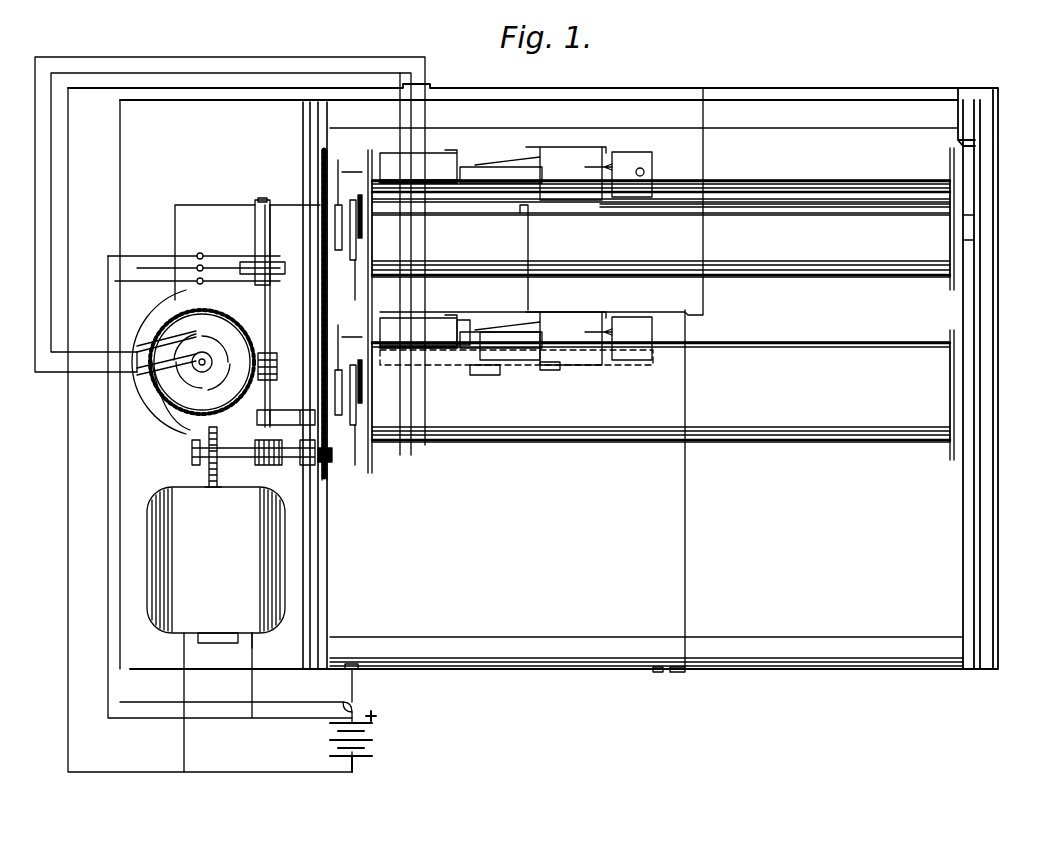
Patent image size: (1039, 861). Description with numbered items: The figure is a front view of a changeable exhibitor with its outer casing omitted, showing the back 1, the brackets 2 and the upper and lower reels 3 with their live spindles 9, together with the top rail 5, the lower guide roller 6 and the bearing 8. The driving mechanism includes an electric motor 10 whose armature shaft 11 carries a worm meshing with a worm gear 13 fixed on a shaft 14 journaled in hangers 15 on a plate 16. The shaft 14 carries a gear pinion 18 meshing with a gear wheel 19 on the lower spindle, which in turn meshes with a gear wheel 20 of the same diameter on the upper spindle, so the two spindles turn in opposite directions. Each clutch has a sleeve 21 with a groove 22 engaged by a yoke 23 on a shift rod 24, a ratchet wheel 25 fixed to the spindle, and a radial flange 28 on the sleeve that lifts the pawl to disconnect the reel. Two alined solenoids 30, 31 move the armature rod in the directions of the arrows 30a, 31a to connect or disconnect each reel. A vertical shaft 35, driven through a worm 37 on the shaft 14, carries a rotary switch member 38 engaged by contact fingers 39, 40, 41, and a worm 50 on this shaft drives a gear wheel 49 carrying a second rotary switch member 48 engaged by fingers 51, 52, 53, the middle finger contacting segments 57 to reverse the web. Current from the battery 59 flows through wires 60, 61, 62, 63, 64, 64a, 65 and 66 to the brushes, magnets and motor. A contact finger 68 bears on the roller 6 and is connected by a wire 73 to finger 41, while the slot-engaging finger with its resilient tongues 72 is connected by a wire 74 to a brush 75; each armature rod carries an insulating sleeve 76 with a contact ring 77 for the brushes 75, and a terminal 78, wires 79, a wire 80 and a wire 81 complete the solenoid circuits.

The back 1 is at (808, 90).
The bracket 2 is at (985, 420).
The reel 3 is at (792, 340).
The top rail 5 is at (902, 100).
The lower guide roller 6 is at (918, 650).
The roller bearing 8 is at (965, 215).
The live spindle 9 is at (364, 228).
The electric motor 10 is at (216, 560).
The armature shaft 11 is at (218, 643).
The worm gear 13 is at (220, 468).
The shaft 14 is at (234, 450).
The hanger 15 is at (180, 448).
The plate 16 is at (200, 205).
The gear pinion 18 is at (330, 480).
The gear wheel 19 is at (332, 462).
The gear wheel 20 is at (322, 165).
The sleeve 21 is at (352, 262).
The groove 22 is at (322, 258).
The yoke 23 is at (324, 186).
The shift rod 24 is at (344, 172).
The ratchet wheel 25 is at (372, 262).
The radial flange 28 is at (372, 215).
The solenoid 30 is at (440, 160).
The arrow 30a is at (470, 170).
The solenoid 31 is at (570, 160).
The arrow 31a is at (600, 165).
The vertical shaft 35 is at (286, 336).
The worm 37 is at (272, 465).
The rotary switch member 38 is at (272, 285).
The contact finger 39 is at (205, 265).
The contact finger 40 is at (198, 253).
The contact finger 41 is at (205, 283).
The rotary switch member 48 is at (212, 350).
The gear wheel 49 is at (253, 390).
The worm 50 is at (289, 356).
The contact finger 51 is at (168, 415).
The contact finger 52 is at (200, 326).
The contact finger 53 is at (160, 440).
The contact segment 57 is at (255, 645).
The battery 59 is at (372, 740).
The wire 60 is at (145, 728).
The wire 61 is at (623, 88).
The wire 62 is at (400, 112).
The wire 63 is at (425, 60).
The wire 64 is at (318, 57).
The wire 64a is at (135, 305).
The wire 65 is at (462, 320).
The wire 66 is at (186, 740).
The contact finger 68 is at (352, 664).
The resilient tongue 72 is at (680, 672).
The wire 73 is at (356, 702).
The wire 74 is at (688, 536).
The brush 75 is at (510, 330).
The sleeve 76 is at (480, 375).
The contact ring 77 is at (508, 367).
The terminal 78 is at (552, 370).
The wire 79 is at (612, 142).
The wire 80 is at (660, 208).
The wire 81 is at (530, 242).